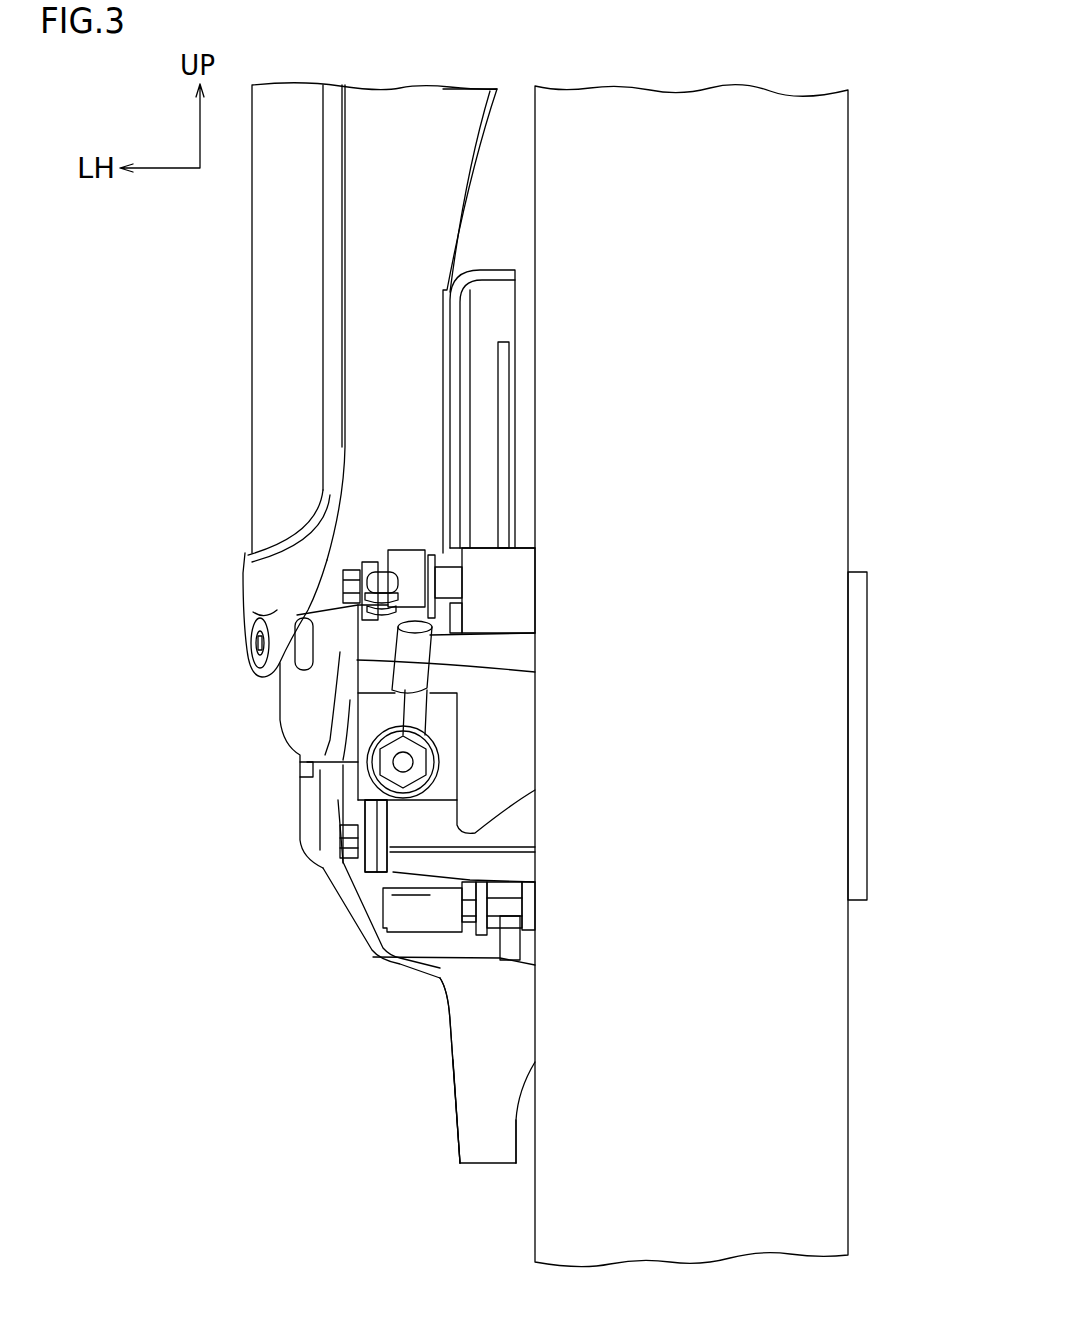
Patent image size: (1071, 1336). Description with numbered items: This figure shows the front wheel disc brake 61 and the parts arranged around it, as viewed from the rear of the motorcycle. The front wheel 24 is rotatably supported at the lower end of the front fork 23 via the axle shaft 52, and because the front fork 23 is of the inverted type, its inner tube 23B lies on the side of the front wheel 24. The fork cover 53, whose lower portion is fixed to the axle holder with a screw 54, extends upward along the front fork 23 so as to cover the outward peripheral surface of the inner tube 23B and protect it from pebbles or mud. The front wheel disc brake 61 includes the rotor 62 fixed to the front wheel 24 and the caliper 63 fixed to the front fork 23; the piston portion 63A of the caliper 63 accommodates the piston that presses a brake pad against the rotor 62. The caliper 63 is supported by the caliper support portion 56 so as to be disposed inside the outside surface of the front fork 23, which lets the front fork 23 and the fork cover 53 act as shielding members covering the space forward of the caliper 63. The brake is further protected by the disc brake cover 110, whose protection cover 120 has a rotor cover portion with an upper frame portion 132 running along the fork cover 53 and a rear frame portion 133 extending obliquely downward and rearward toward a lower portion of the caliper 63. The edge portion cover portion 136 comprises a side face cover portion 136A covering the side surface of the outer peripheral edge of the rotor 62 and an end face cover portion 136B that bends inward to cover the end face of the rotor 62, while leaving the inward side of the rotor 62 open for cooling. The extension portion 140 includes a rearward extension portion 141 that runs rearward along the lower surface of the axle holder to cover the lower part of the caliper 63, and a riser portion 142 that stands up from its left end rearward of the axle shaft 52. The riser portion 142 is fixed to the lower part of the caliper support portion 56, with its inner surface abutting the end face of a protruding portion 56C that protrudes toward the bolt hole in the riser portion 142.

The front wheel 24 is at (837, 178).
The fork cover 53 is at (285, 125).
The inner tube 23B is at (370, 229).
The front fork 23 is at (280, 702).
The edge portion cover portion 136 is at (142, 285).
The end face cover portion 136B is at (452, 303).
The side face cover portion 136A is at (452, 352).
The upper frame portion 132 is at (453, 407).
The front wheel disc brake 61 is at (157, 425).
The rotor 62 is at (499, 445).
The caliper 63 is at (400, 540).
The piston portion 63A is at (350, 790).
The screw 54 is at (255, 625).
The axle shaft 52 is at (300, 762).
The riser portion 142 is at (300, 812).
The protruding portion 56C is at (352, 817).
The caliper support portion 56 is at (376, 836).
The extension portion 140 is at (397, 875).
The rearward extension portion 141 is at (372, 958).
The disc brake cover 110 is at (431, 1040).
The protection cover 120 is at (450, 1070).
The rear frame portion 133 is at (455, 1095).